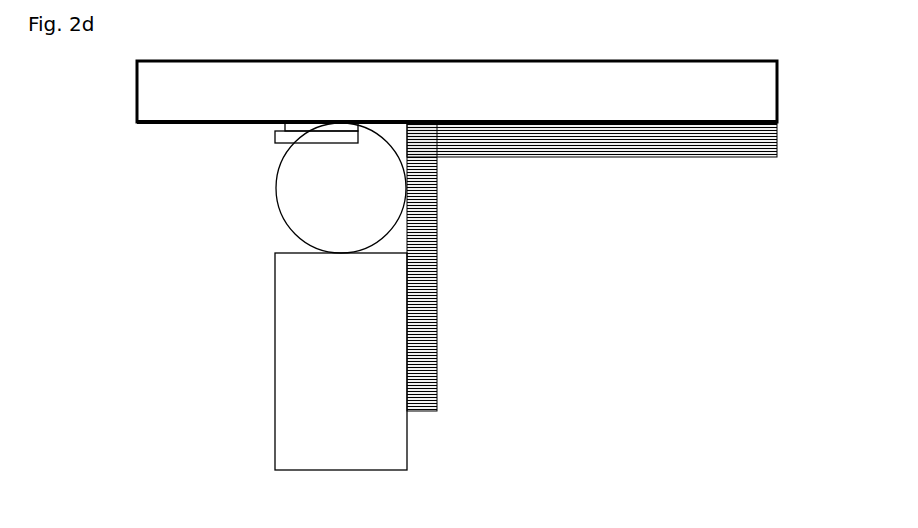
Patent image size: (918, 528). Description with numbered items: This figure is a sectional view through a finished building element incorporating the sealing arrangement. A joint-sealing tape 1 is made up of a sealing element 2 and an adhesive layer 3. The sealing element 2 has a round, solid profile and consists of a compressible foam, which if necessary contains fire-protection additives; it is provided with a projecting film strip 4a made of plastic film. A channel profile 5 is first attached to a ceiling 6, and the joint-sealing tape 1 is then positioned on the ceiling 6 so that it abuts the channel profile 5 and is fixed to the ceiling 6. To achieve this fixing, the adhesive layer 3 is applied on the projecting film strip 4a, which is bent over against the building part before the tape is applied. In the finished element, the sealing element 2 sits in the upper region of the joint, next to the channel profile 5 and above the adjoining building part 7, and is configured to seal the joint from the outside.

The joint-sealing tape 1 is at (270, 205).
The sealing element 2 is at (340, 193).
The adhesive layer 3 is at (277, 133).
The projecting film strip 4a is at (323, 137).
The channel profile 5 is at (562, 138).
The ceiling 6 is at (700, 92).
The housing 7 is at (368, 456).